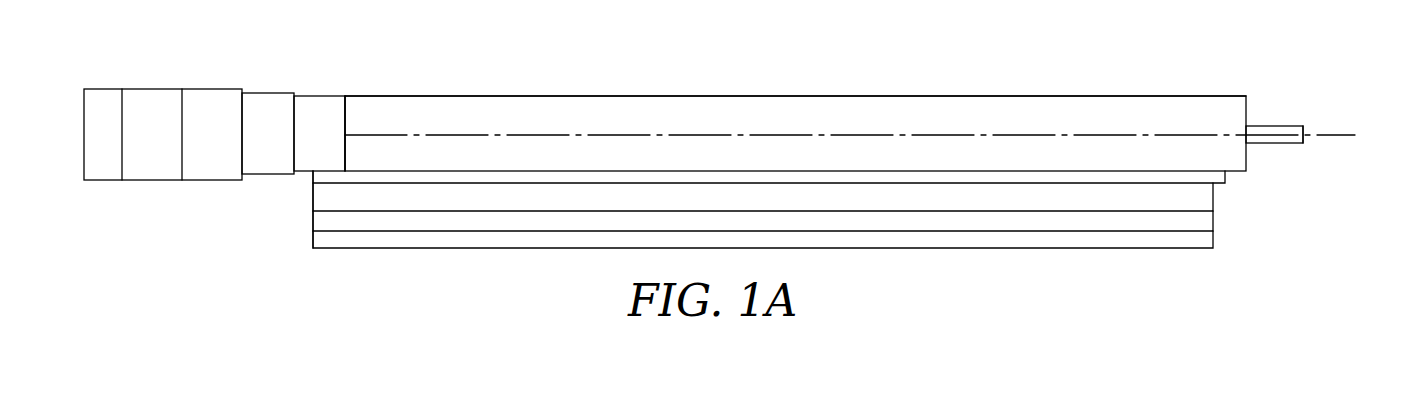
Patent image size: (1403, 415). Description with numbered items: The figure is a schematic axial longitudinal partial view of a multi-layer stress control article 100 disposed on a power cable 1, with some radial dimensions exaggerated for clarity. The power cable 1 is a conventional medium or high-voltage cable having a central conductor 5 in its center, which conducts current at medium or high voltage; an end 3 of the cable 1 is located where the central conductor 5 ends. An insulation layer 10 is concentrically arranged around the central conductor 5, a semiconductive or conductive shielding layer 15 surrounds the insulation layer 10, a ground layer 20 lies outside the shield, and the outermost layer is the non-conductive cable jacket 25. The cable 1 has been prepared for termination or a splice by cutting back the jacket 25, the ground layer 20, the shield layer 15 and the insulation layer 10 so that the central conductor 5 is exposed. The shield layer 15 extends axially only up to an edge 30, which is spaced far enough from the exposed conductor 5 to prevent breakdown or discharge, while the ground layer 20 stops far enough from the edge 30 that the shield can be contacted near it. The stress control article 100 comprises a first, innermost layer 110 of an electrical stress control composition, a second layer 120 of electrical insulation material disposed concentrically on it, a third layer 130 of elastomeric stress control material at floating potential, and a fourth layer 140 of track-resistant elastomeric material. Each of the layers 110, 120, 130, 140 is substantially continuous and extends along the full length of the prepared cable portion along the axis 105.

The power cable 1 is at (1024, 96).
The end of the cable 3 is at (1304, 128).
The central conductor 5 is at (1273, 126).
The insulation layer 10 is at (1144, 96).
The shielding layer 15 is at (325, 96).
The ground layer 20 is at (265, 93).
The cable jacket 25 is at (211, 89).
The edge of the shield layer 30 is at (345, 96).
The multi-layer stress control article 100 is at (272, 226).
The axis 105 is at (771, 135).
The first layer 110 is at (1226, 180).
The second layer 120 is at (1215, 197).
The third layer 130 is at (1215, 221).
The fourth layer 140 is at (1215, 238).